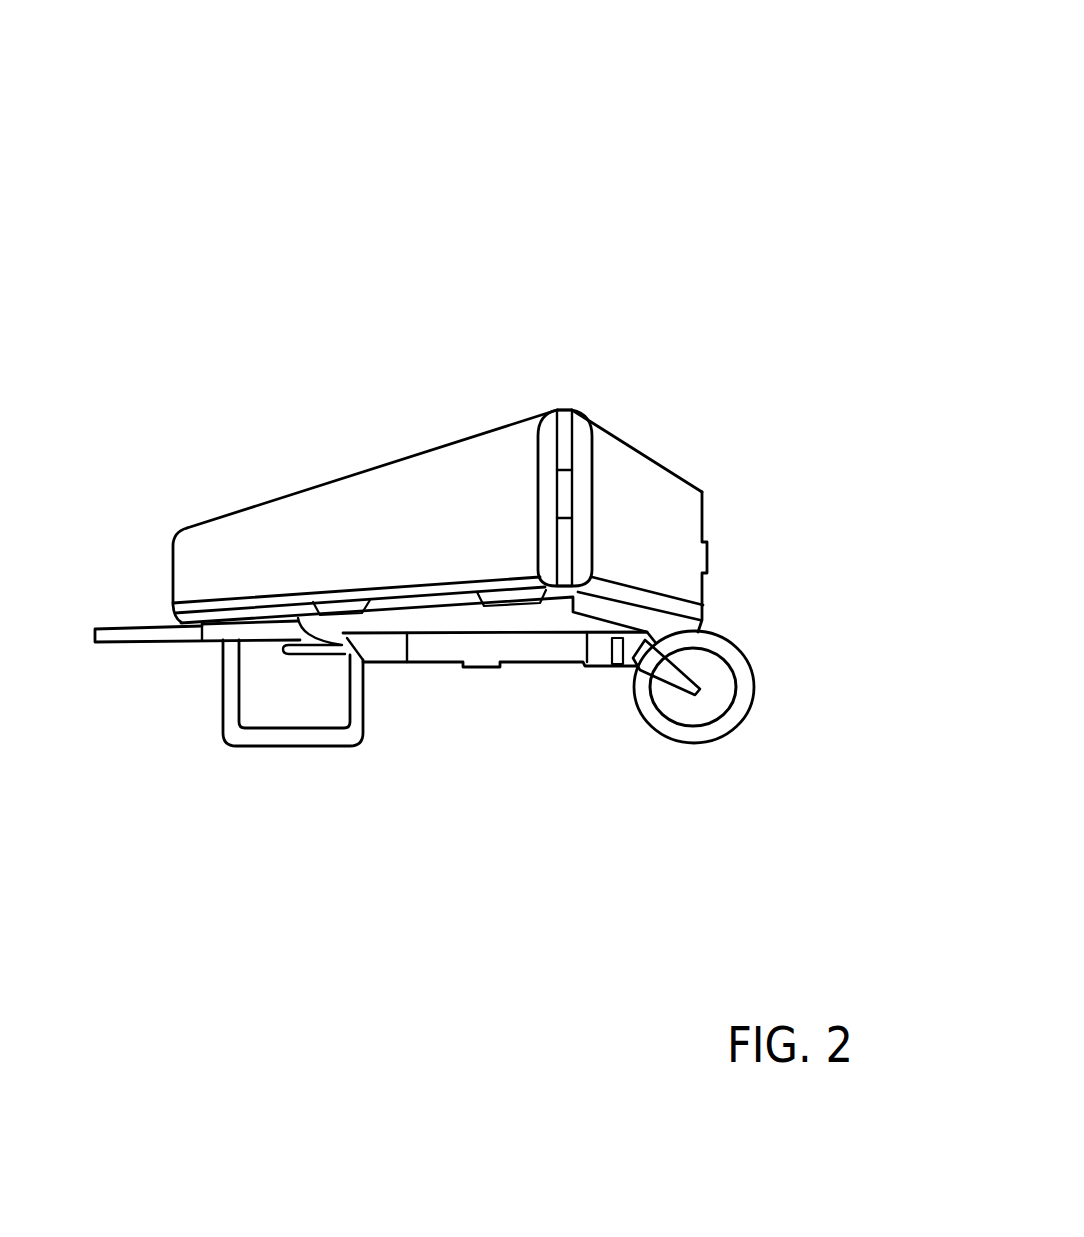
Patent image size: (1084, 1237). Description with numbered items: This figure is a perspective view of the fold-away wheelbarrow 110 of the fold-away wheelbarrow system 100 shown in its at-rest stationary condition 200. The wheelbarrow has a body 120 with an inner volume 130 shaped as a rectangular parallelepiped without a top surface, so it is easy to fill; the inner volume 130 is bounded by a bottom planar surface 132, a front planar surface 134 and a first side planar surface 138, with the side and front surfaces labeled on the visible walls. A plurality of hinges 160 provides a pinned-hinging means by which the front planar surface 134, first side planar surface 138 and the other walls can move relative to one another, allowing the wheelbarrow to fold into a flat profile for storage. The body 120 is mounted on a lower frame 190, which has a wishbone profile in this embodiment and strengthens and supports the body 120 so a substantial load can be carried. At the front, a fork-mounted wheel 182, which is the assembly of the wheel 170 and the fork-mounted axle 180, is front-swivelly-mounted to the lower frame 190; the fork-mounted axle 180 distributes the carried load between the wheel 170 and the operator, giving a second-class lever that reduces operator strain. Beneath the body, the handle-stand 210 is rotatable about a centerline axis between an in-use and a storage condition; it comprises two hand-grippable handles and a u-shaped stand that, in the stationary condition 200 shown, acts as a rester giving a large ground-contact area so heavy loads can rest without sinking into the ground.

The fold-away wheelbarrow system 100 is at (713, 117).
The fold-away wheelbarrow 110 is at (715, 180).
The at-rest stationary condition 200 is at (727, 247).
The body 120 is at (472, 437).
The inner volume 130 is at (328, 480).
The first side planar surface 138 is at (437, 538).
The front planar surface 134 is at (650, 452).
The hinges 160 is at (565, 572).
The bottom planar surface 132 is at (513, 620).
The lower frame 190 is at (412, 662).
The handle-stand 210 is at (135, 645).
The fork-mounted axle 180 is at (673, 685).
The wheel 170 is at (718, 743).
The fork-mounted wheel 182 is at (727, 640).